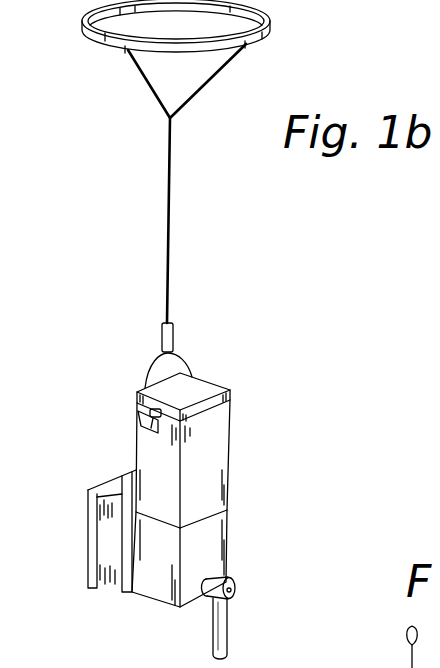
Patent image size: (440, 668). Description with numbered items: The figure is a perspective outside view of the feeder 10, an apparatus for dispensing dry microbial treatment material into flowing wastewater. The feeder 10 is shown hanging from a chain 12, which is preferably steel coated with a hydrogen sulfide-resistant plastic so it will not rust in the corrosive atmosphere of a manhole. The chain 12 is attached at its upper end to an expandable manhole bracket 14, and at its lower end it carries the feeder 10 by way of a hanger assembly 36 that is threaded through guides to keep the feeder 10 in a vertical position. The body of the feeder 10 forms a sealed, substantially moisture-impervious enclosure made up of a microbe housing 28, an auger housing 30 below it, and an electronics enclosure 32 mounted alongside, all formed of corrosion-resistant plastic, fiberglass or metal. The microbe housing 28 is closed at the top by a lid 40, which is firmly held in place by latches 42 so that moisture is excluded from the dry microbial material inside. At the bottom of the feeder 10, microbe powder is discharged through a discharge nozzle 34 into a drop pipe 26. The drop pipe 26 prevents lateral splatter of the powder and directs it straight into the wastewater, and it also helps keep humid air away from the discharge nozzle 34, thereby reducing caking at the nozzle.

The feeder 10 is at (108, 390).
The chain 12 is at (172, 266).
The bracket 14 is at (262, 40).
The drop pipe 26 is at (229, 638).
The microbe housing 28 is at (230, 488).
The auger housing 30 is at (232, 555).
The electronics enclosure 32 is at (87, 538).
The discharge nozzle 34 is at (236, 580).
The hanger assembly 36 is at (13, 667).
The lid 40 is at (202, 390).
The latch 42 is at (137, 428).